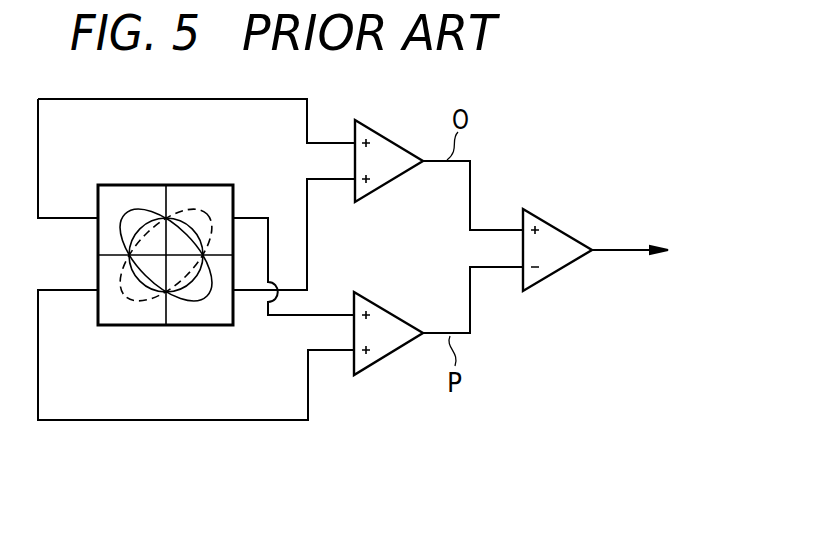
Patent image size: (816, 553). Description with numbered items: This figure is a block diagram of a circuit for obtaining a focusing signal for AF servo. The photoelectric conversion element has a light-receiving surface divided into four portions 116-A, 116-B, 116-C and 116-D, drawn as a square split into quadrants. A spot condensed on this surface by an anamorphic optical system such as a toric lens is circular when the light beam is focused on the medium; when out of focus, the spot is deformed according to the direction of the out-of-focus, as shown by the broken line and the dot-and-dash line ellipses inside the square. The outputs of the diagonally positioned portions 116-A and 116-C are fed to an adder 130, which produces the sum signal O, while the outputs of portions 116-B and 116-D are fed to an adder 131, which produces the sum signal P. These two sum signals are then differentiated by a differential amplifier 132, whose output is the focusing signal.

The light-receiving surface portion A 116-A is at (118, 185).
The light-receiving surface portion B 116-B is at (206, 185).
The light-receiving surface portion C 116-C is at (203, 326).
The light-receiving surface portion D 116-D is at (118, 326).
The adder 130 is at (387, 187).
The adder 131 is at (388, 360).
The differential amplifier 132 is at (566, 264).